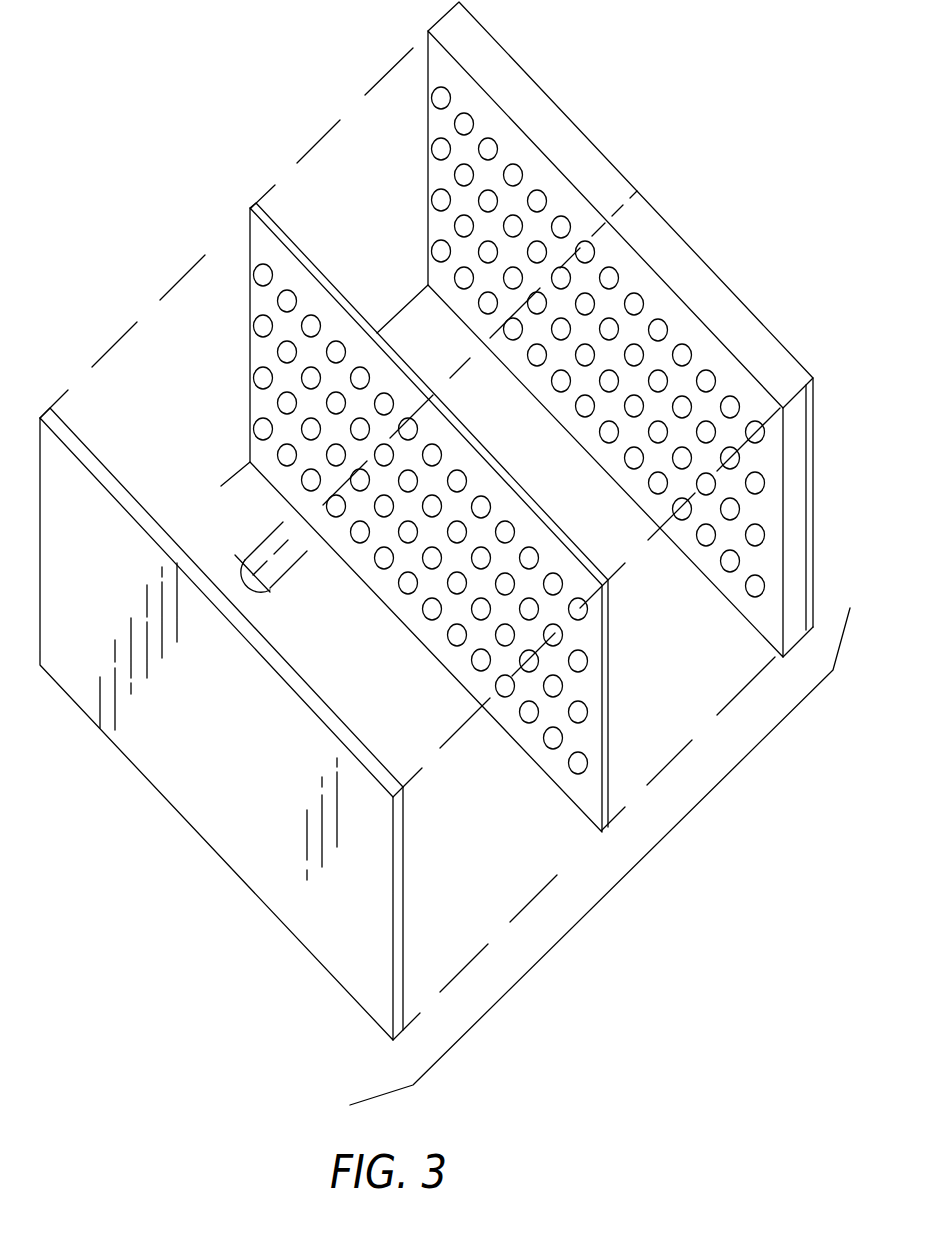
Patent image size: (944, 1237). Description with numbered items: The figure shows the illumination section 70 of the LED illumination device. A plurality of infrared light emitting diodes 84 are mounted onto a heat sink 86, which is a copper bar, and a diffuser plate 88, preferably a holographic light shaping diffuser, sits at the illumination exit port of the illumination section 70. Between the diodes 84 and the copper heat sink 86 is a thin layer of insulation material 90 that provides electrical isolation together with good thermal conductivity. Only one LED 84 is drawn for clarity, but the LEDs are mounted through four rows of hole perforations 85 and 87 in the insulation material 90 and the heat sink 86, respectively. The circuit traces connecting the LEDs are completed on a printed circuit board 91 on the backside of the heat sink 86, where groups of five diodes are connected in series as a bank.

The illumination section 70 is at (148, 153).
The light emitting diode 84 is at (285, 567).
The rows of hole perforations in the insulation material 85 is at (578, 610).
The heat sink 86 is at (576, 329).
The rows of hole perforations in the heat sink 87 is at (441, 98).
The diffuser plate 88 is at (203, 808).
The insulation material 90 is at (432, 511).
The printed circuit board 91 is at (735, 302).